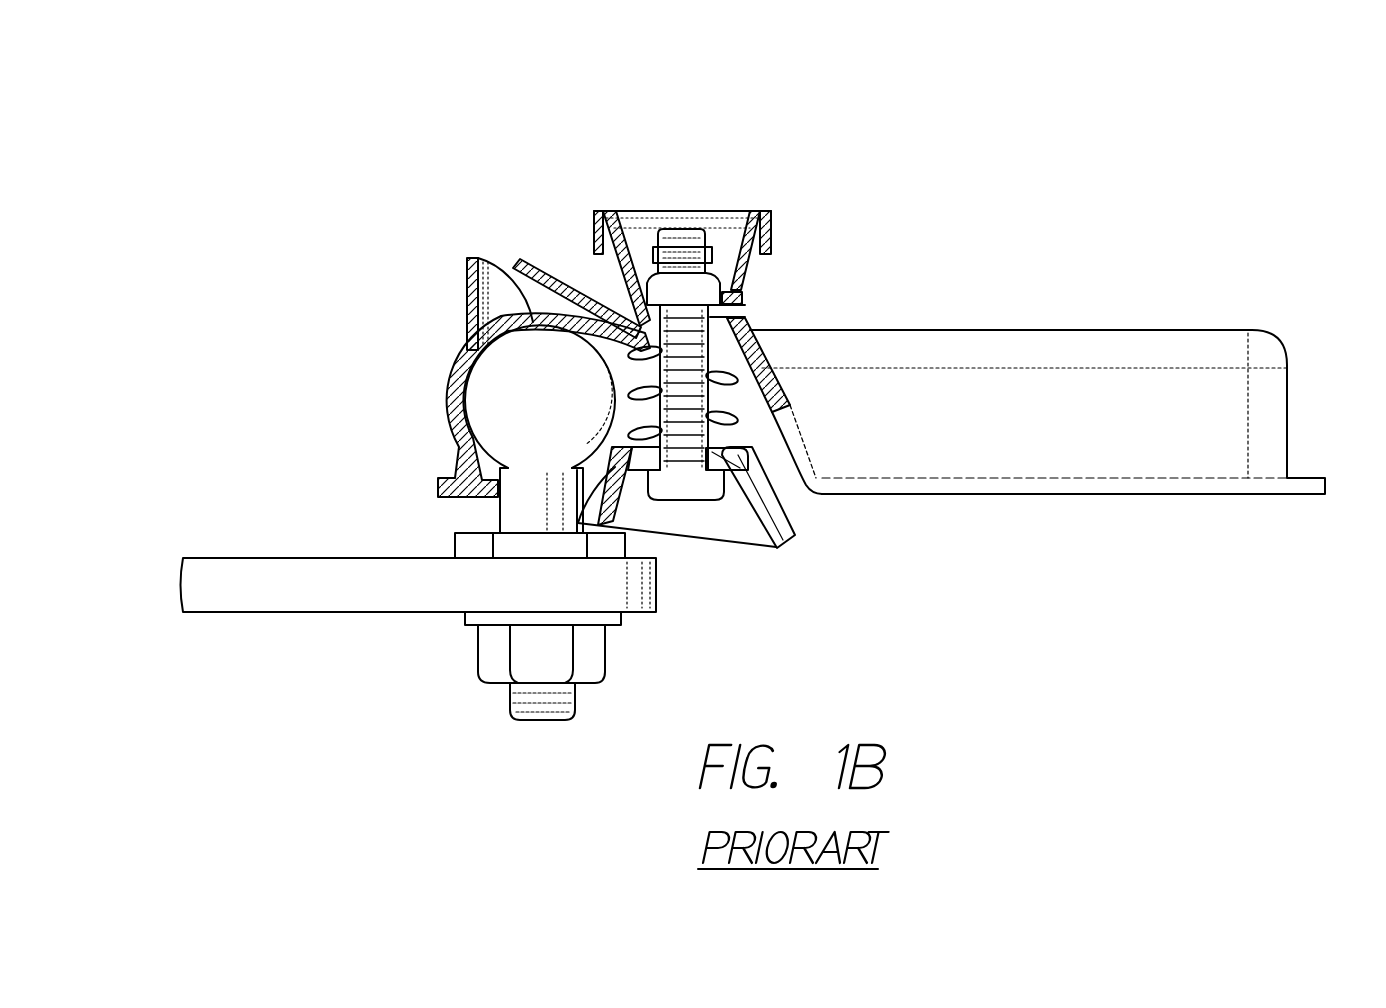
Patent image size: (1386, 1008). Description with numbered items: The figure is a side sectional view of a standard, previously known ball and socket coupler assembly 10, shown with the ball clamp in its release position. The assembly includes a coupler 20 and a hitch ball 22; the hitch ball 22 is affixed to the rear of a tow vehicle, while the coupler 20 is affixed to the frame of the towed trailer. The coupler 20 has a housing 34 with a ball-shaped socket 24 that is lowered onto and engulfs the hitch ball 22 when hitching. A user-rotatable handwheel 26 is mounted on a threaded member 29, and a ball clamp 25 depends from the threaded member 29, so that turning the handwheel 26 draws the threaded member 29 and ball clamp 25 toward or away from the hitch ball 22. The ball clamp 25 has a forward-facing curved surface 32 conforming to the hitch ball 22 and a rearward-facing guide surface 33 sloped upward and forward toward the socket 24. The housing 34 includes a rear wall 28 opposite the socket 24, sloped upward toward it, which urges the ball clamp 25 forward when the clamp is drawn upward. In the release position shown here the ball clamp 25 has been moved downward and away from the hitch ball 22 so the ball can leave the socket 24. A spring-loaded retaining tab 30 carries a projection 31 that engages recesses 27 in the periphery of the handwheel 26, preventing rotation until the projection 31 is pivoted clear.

The coupler assembly 10 is at (388, 207).
The coupler 20 is at (402, 367).
The hitch ball 22 is at (553, 421).
The socket 24 is at (458, 430).
The ball clamp 25 is at (657, 521).
The handwheel 26 is at (730, 211).
The recesses 27 is at (641, 320).
The rear wall 28 is at (780, 412).
The threaded member 29 is at (707, 483).
The retaining tab 30 is at (517, 285).
The projection 31 is at (600, 292).
The curved surface 32 is at (578, 523).
The guide surface 33 is at (790, 540).
The housing 34 is at (850, 330).